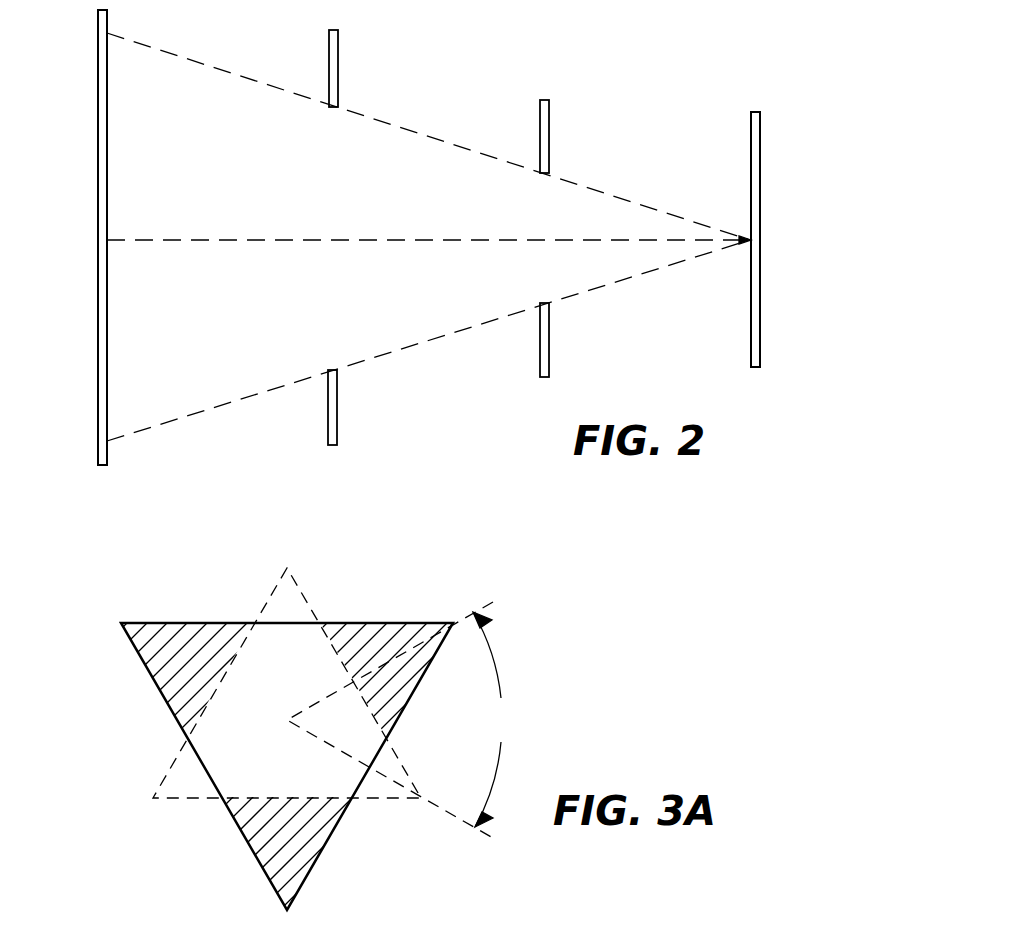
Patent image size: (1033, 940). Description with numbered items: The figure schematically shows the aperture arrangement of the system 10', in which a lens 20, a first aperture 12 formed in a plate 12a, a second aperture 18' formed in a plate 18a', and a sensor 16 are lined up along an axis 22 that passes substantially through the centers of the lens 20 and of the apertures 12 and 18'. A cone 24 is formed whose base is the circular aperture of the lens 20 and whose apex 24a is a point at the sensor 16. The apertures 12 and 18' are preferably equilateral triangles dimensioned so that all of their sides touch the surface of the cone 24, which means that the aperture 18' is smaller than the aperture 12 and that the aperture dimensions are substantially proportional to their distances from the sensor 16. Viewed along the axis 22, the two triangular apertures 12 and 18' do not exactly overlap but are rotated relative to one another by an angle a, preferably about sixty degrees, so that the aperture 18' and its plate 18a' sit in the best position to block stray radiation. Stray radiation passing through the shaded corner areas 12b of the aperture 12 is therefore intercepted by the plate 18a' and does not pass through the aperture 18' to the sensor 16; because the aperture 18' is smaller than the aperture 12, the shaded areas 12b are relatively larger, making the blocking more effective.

In FIG. 2, the system 10' is at (707, 24).
In FIG. 2, the aperture 12 is at (346, 200).
In FIG. 3A, the aperture 12 is at (165, 634).
In FIG. 2, the plate 12a is at (338, 68).
In FIG. 3A, the shaded areas 12b is at (163, 673).
In FIG. 2, the sensor 16 is at (760, 175).
In FIG. 2, the aperture 18' is at (542, 208).
In FIG. 3A, the aperture 18' is at (323, 703).
In FIG. 2, the plate 18a' is at (585, 237).
In FIG. 2, the lens 20 is at (107, 328).
In FIG. 2, the axis 22 is at (185, 240).
In FIG. 2, the cone 24 is at (414, 346).
In FIG. 2, the apex 24a is at (760, 240).
In FIG. 3A, the angle a is at (491, 719).